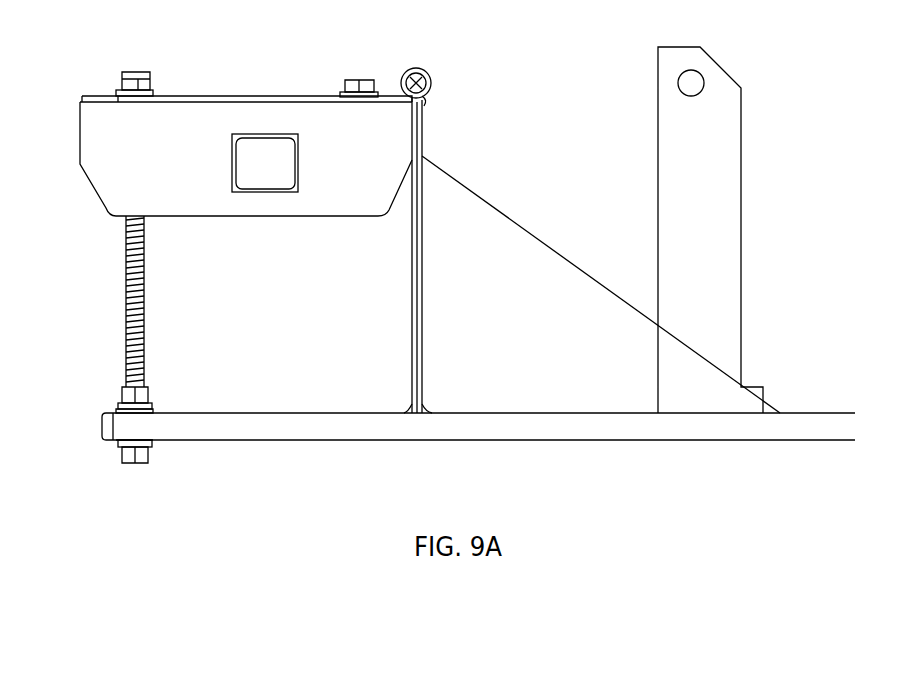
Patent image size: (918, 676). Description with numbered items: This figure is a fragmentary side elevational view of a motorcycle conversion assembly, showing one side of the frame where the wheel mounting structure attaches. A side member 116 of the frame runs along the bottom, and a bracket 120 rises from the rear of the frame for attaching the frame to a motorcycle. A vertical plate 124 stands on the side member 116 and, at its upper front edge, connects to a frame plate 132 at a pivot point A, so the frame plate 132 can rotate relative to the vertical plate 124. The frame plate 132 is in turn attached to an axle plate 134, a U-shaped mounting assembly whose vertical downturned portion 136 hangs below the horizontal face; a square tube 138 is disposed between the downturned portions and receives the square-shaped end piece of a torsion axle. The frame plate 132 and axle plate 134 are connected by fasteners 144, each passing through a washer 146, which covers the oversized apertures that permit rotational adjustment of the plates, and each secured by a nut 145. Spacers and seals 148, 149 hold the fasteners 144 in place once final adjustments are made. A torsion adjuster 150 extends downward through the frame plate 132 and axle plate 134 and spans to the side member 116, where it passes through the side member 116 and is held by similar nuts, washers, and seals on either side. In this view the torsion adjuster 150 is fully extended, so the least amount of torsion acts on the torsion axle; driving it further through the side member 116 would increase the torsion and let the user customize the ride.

The side member 116 is at (813, 413).
The bracket 120 is at (731, 153).
The vertical plate 124 is at (510, 263).
The frame plate 132 is at (222, 96).
The axle plate 134 is at (105, 100).
The downturned portion 136 is at (112, 170).
The square tube 138 is at (261, 180).
The fastener 144 is at (142, 72).
The nut 145 is at (122, 395).
The washer 146 is at (120, 91).
The spacer and seal 148 is at (150, 405).
The spacer and seal 149 is at (155, 411).
The torsion adjuster 150 is at (128, 70).
The pivot point A is at (427, 72).